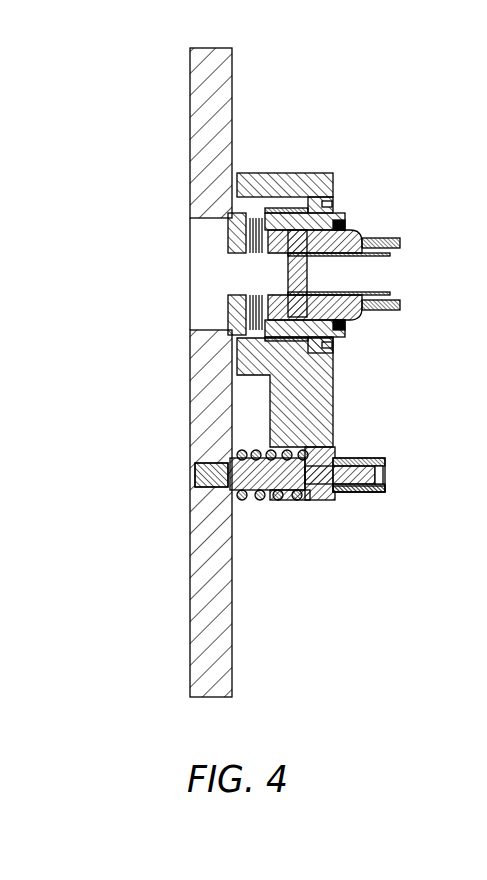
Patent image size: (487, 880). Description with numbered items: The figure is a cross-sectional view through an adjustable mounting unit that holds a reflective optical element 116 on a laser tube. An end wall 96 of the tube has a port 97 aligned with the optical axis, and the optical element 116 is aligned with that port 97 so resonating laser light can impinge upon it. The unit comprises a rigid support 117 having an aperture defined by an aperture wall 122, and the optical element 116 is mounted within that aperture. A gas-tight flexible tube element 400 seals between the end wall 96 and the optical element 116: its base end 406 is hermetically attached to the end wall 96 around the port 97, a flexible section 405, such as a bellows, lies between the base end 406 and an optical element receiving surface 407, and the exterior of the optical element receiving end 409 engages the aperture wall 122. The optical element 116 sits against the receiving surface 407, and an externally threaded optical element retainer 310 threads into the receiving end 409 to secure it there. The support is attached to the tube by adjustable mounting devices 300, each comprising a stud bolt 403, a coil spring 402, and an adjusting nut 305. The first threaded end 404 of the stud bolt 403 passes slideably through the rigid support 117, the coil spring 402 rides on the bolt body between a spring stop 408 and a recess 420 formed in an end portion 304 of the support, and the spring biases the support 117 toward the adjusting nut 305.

The end wall 96 is at (210, 543).
The port 97 is at (190, 283).
The optical element 116 is at (307, 270).
The rigid support 117 is at (316, 408).
The aperture wall 122 is at (236, 320).
The adjustable mounting device 300 is at (358, 512).
The end portion 304 is at (334, 500).
The adjusting nut 305 is at (352, 460).
The optical element retainer 310 is at (350, 230).
The flexible tube element 400 is at (254, 213).
The coil spring 402 is at (243, 500).
The stud bolt 403 is at (230, 477).
The first threaded end 404 is at (374, 472).
The flexible section 405 is at (252, 212).
The base end 406 is at (236, 238).
The optical element receiving surface 407 is at (265, 216).
The spring stop 408 is at (365, 322).
The optical element receiving end 409 is at (335, 213).
The recess 420 is at (266, 520).